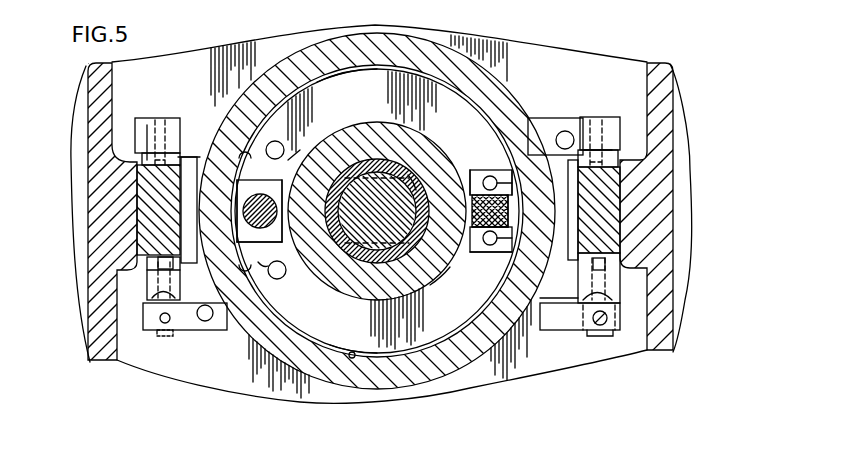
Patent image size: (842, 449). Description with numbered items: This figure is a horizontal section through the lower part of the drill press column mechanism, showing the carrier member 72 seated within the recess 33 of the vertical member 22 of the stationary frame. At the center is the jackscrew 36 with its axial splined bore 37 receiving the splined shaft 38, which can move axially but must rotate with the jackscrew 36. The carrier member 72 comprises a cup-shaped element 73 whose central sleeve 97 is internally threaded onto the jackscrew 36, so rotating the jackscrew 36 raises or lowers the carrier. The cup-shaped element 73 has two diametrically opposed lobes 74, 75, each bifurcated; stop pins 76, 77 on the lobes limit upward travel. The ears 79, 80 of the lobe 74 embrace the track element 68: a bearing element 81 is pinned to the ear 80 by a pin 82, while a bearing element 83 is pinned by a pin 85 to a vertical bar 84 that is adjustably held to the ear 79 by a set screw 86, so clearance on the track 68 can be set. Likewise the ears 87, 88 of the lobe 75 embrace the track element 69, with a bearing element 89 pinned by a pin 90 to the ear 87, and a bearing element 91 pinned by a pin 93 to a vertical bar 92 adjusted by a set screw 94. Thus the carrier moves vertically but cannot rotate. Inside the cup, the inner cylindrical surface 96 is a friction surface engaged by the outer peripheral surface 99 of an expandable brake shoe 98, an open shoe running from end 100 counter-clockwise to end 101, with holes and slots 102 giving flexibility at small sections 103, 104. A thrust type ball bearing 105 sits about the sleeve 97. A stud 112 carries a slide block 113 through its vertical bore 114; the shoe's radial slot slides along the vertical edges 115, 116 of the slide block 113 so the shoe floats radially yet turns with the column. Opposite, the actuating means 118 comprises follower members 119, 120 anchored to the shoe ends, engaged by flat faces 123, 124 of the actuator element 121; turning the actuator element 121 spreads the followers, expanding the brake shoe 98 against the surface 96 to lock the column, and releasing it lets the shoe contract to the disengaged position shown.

The vertical member 22 is at (93, 97).
The recess 33 is at (118, 72).
The jackscrew 36 is at (402, 172).
The axial splined bore 37 is at (372, 183).
The splined shaft 38 is at (367, 211).
The track element 68 is at (143, 201).
The track element 69 is at (605, 190).
The carrier member 72 is at (466, 368).
The cup-shaped element 73 is at (413, 44).
The lobe 74 is at (193, 157).
The lobe 75 is at (564, 160).
The stop pin 76 is at (208, 320).
The stop pin 77 is at (565, 131).
The ear 79 is at (158, 326).
The ear 80 is at (142, 122).
The bearing element 81 is at (147, 160).
The pin 82 is at (160, 122).
The bearing element 83 is at (150, 270).
The vertical bar 84 is at (149, 292).
The pin 85 is at (181, 273).
The set screw 86 is at (164, 337).
The ear 87 is at (612, 121).
The ear 88 is at (618, 304).
The bearing element 89 is at (616, 152).
The pin 90 is at (597, 117).
The bearing element 91 is at (584, 264).
The vertical bar 92 is at (609, 286).
The pin 93 is at (603, 257).
The set screw 94 is at (600, 334).
The inner cylindrical surface 96 is at (352, 352).
The sleeve 97 is at (412, 184).
The expandable brake shoe 98 is at (474, 122).
The outer peripheral surface 99 is at (313, 76).
The shoe end 100 is at (491, 171).
The shoe end 101 is at (484, 253).
The holes and slots 102 is at (277, 141).
The small section 103 is at (257, 211).
The small section 104 is at (272, 256).
The thrust type ball bearing 105 is at (424, 273).
The stud 112 is at (252, 220).
The slide block 113 is at (289, 187).
The vertical bore 114 is at (250, 200).
The vertical edge 115 is at (300, 150).
The vertical edge 116 is at (251, 239).
The actuating means 118 is at (511, 186).
The follower member 119 is at (478, 172).
The follower member 120 is at (492, 254).
The actuator element 121 is at (509, 206).
The flat face 123 is at (492, 218).
The flat face 124 is at (489, 211).